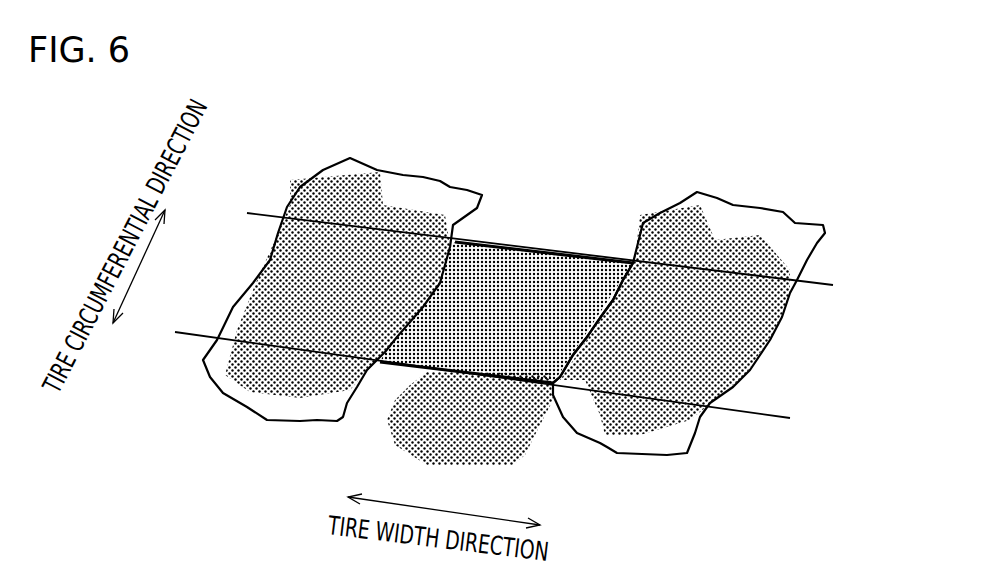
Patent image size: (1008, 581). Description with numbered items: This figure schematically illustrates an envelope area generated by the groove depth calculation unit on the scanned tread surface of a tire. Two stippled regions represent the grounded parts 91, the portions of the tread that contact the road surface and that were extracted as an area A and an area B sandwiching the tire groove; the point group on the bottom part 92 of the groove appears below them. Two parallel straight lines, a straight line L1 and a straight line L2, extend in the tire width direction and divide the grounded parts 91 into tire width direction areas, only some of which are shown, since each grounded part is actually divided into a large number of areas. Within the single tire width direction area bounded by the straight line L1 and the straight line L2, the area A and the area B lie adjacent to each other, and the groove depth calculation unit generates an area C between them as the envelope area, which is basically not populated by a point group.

The grounded part 91 is at (263, 275).
The bottom part 92 is at (382, 438).
The area A is at (405, 148).
The area B is at (738, 183).
The area C is at (540, 218).
The straight line L1 is at (560, 256).
The straight line L2 is at (504, 384).